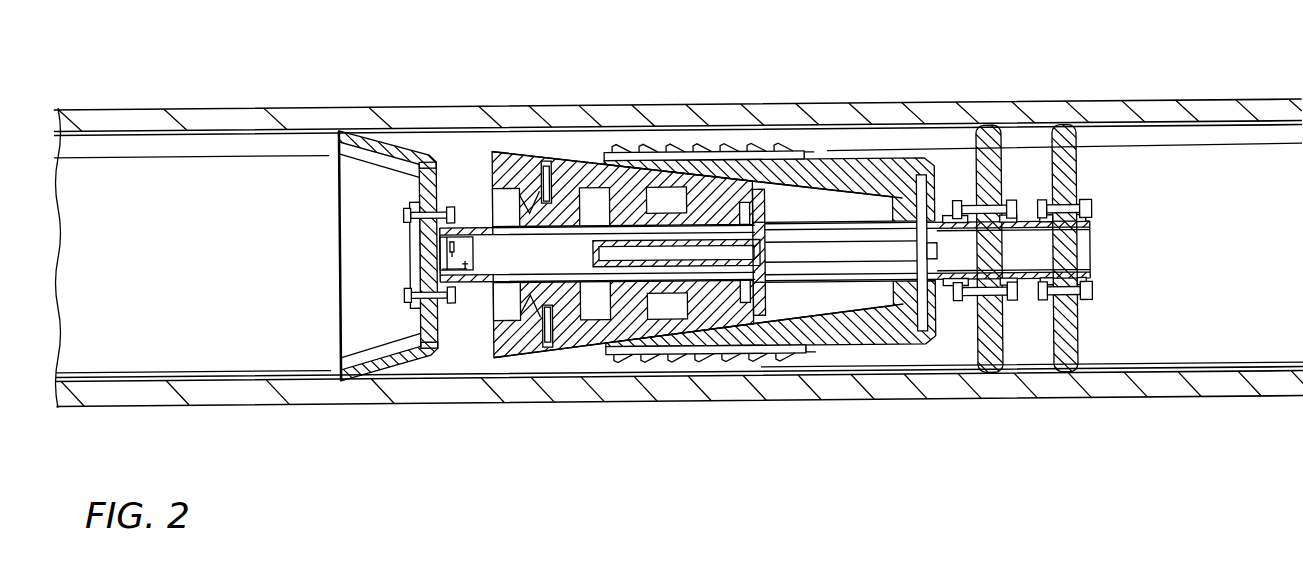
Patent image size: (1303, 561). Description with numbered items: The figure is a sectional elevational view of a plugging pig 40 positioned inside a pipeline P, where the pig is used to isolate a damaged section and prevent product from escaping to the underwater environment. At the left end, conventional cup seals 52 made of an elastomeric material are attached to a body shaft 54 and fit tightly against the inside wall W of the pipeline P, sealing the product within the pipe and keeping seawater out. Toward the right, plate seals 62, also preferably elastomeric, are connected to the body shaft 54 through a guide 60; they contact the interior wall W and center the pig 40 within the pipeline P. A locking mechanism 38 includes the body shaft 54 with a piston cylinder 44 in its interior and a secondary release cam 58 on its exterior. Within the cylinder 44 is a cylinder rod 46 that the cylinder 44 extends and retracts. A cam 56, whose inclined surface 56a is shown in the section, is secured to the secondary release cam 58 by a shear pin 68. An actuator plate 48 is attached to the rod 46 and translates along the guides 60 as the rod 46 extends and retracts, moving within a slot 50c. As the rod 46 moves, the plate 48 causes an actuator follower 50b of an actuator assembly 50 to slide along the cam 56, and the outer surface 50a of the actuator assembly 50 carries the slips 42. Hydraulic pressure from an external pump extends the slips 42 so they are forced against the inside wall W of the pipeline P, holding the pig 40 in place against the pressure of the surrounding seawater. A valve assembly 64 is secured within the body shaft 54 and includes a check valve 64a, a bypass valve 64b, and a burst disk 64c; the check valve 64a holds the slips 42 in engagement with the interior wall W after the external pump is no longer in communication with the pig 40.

The pipeline P is at (1168, 100).
The inside wall W is at (143, 133).
The locking mechanism 38 is at (592, 253).
The plugging pig 40 is at (508, 150).
The slips 42 is at (660, 142).
The piston cylinder 44 is at (623, 257).
The cylinder rod 46 is at (890, 260).
The actuator plate 48 is at (920, 290).
The actuator assembly 50 is at (880, 162).
The outer surface 50a is at (812, 157).
The actuator follower 50b is at (822, 300).
The slot 50c is at (921, 176).
The cup seals 52 is at (393, 138).
The body shaft 54 is at (473, 215).
The cam 56 is at (648, 320).
The inclined surface 56a is at (589, 208).
The secondary release cam 58 is at (690, 190).
The guide 60 is at (862, 232).
The plate seals 62 is at (1060, 128).
The valve assembly 64 is at (482, 258).
The check valve 64a is at (442, 262).
The bypass valve 64b is at (442, 237).
The burst disk 64c is at (445, 268).
The shear pin 68 is at (546, 183).